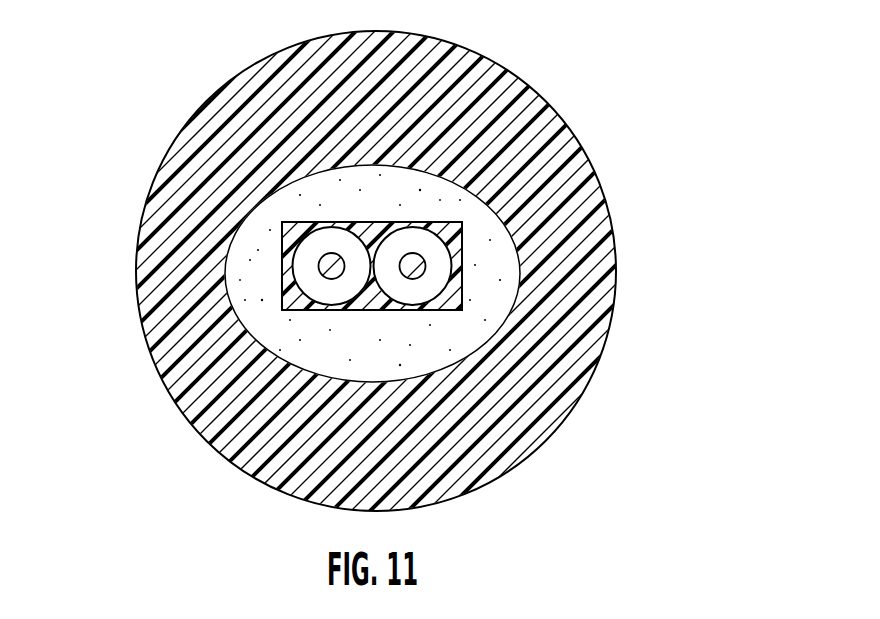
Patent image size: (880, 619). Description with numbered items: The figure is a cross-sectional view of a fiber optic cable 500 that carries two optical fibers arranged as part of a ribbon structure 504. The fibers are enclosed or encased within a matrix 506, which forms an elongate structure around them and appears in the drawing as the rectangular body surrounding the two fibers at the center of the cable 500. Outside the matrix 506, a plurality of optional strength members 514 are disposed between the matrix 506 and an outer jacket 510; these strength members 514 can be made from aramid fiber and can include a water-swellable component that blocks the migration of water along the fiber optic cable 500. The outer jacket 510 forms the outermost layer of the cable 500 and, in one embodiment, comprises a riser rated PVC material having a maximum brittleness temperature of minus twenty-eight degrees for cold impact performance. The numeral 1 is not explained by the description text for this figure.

The fiber optic cable 500 is at (440, 309).
The outer jacket 510 is at (307, 92).
The ribbon structure 504 is at (283, 187).
The strength members 514 is at (257, 242).
The matrix 506 is at (368, 308).
The conductor 1 is at (325, 267).